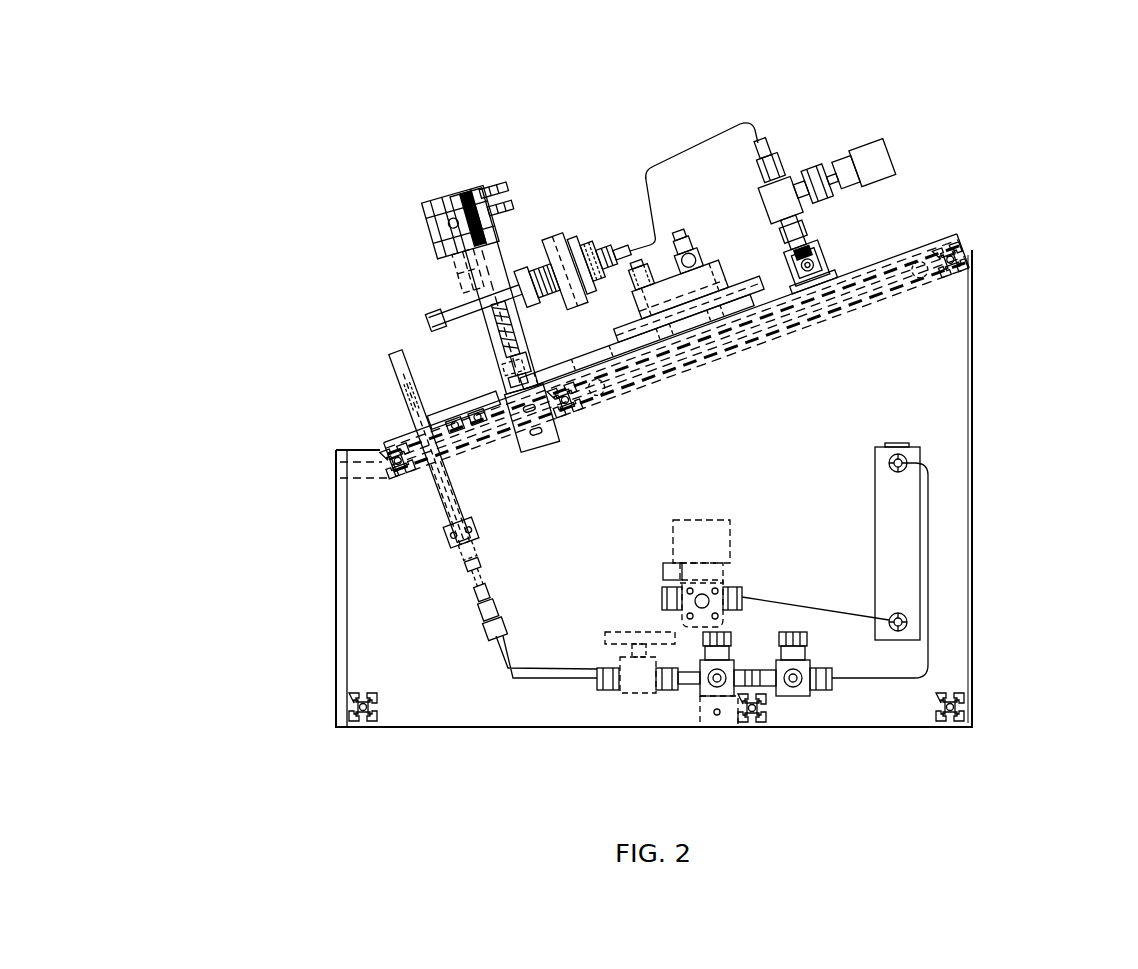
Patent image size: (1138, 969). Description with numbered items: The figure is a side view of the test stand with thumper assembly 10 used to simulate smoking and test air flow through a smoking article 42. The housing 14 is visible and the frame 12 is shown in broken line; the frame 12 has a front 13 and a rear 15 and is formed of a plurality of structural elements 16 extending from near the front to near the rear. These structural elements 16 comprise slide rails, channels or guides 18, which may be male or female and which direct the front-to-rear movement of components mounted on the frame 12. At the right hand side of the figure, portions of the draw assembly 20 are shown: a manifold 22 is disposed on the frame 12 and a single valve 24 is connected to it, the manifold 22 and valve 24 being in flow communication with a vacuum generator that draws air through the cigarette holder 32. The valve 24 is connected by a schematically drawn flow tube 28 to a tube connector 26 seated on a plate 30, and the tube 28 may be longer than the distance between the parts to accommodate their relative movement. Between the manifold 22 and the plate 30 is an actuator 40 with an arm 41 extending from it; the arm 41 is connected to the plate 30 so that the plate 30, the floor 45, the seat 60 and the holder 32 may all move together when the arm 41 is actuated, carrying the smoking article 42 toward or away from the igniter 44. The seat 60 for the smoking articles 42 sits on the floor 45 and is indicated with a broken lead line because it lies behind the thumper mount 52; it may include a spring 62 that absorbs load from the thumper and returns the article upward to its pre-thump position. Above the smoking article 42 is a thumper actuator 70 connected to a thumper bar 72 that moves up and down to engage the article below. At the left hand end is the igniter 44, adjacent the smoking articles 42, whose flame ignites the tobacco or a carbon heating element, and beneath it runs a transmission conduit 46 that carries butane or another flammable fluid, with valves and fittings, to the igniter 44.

The testing assembly 10 is at (1032, 68).
The frame 12 is at (926, 320).
The front 13 is at (308, 595).
The housing 14 is at (706, 464).
The rear 15 is at (1006, 492).
The structural elements 16 is at (962, 262).
The guide 18 is at (947, 236).
The draw assembly 20 is at (834, 128).
The manifold 22 is at (826, 262).
The valve 24 is at (814, 212).
The tube connectors 26 is at (612, 248).
The flow tubes 28 is at (700, 130).
The plate 30 is at (582, 235).
The cigarette holder 32 is at (555, 236).
The actuator 40 is at (700, 250).
The arm 41 is at (660, 340).
The smoking article 42 is at (507, 287).
The igniter 44 is at (374, 358).
The floor 45 is at (591, 410).
The transmission conduit 46 is at (636, 700).
The thumper mount 52 is at (515, 430).
The seat 60 is at (480, 348).
The spring 62 is at (512, 323).
The thumper actuator 70 is at (468, 186).
The thumper bar 72 is at (462, 290).